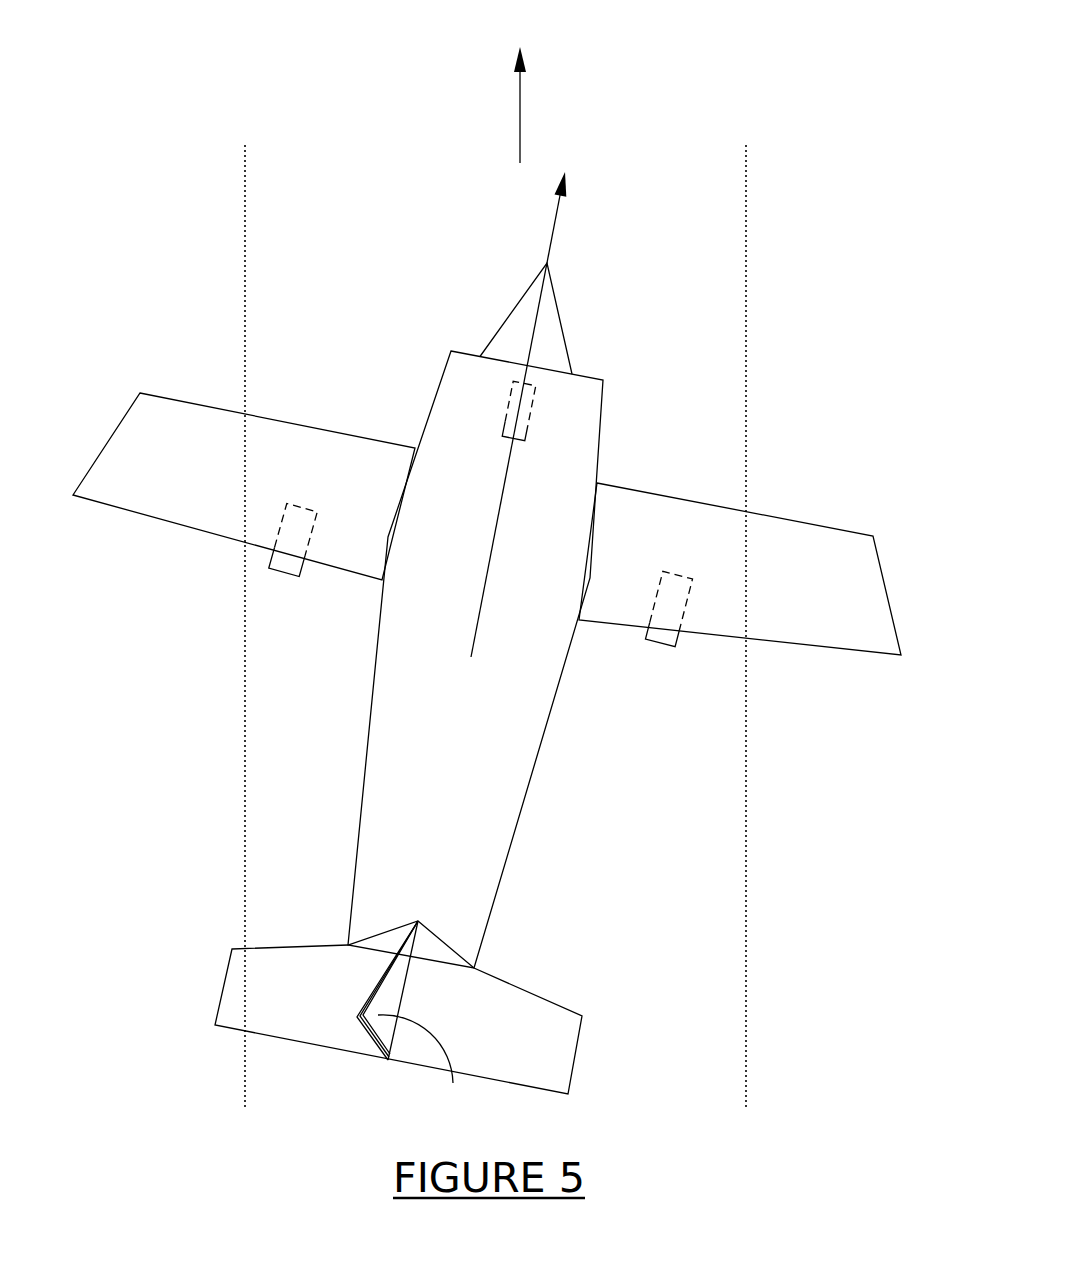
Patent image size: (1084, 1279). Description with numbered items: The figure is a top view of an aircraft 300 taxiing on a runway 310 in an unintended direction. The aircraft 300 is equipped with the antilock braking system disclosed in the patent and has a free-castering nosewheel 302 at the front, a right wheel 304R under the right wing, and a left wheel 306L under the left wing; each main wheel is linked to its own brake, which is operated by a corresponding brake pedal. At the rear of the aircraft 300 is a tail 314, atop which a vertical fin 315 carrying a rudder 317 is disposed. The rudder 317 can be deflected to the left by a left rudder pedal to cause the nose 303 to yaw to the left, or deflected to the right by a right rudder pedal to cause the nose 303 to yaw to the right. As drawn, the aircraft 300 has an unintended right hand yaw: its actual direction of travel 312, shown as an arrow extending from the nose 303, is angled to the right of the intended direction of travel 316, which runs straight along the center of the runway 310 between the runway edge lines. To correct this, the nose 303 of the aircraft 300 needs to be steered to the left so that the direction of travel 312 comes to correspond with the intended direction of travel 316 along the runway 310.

The aircraft 300 is at (396, 402).
The free-castering nosewheel 302 is at (533, 402).
The nose 303 is at (443, 278).
The right wheel 304R is at (655, 642).
The left wheel 306L is at (288, 577).
The runway 310 is at (749, 254).
The direction of travel 312 is at (536, 400).
The tail 314 is at (558, 1065).
The vertical fin 315 is at (427, 1063).
The intended direction of travel 316 is at (520, 87).
The rudder 317 is at (367, 1037).